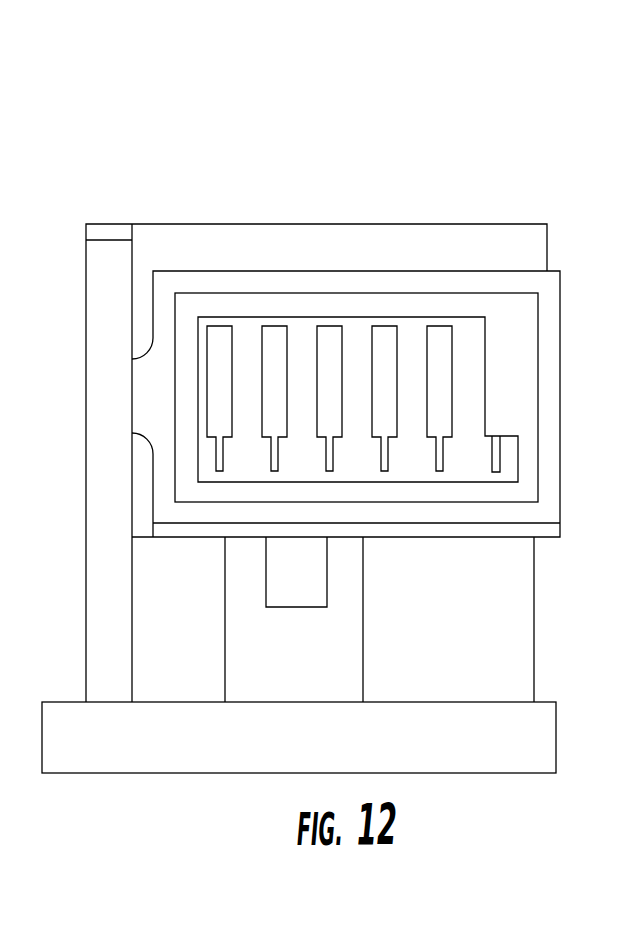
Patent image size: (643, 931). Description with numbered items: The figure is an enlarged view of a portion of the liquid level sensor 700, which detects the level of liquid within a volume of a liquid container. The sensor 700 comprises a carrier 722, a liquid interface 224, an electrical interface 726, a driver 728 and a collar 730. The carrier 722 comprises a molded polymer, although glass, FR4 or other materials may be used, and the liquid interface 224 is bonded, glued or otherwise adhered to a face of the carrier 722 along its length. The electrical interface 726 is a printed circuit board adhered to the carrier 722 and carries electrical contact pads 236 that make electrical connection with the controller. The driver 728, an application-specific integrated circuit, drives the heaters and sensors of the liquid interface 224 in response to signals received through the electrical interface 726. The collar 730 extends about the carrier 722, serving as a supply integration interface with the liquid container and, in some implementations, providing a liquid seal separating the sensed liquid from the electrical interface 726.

The sensor 700 is at (478, 128).
The carrier 722 is at (362, 224).
The electrical interface 726 is at (205, 271).
The electrical contact pad 236 is at (453, 357).
The liquid interface 224 is at (363, 634).
The driver 728 is at (302, 607).
The collar 730 is at (556, 743).